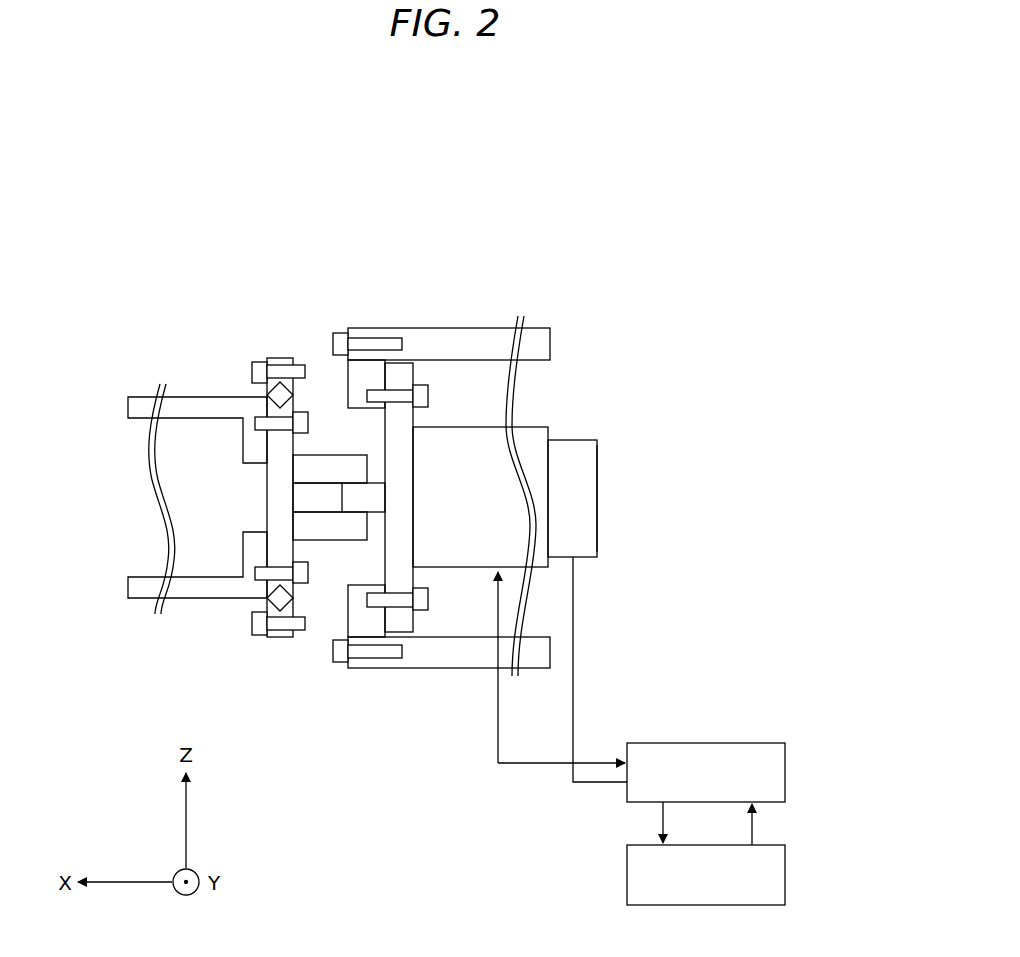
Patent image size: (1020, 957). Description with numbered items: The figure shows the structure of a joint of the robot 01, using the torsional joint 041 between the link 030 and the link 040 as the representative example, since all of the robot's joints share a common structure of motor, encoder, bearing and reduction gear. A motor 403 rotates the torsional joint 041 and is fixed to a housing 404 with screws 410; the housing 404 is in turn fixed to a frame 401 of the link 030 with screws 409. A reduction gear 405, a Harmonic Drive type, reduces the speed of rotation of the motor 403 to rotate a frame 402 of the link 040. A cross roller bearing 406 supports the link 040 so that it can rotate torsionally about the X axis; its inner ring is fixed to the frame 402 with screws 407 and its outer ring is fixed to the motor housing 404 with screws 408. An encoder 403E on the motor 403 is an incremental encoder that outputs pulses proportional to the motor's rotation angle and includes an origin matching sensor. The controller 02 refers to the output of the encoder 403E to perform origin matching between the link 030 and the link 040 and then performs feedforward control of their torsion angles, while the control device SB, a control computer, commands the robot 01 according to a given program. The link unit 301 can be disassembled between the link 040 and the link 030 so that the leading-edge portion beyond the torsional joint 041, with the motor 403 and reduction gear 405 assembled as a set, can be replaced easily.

The robot 01 is at (547, 170).
The link 030 is at (626, 366).
The link 040 is at (133, 479).
The torsional joint 041 is at (267, 491).
The controller 02 is at (787, 768).
The control device SB is at (787, 870).
The link unit 301 is at (132, 272).
The frame 401 is at (540, 331).
The frame 402 is at (140, 400).
The motor 403 is at (545, 466).
The encoder 403E is at (598, 527).
The housing 404 is at (365, 336).
The reduction gear 405 is at (330, 462).
The cross roller bearing 406 is at (282, 365).
The screws 407 is at (253, 578).
The screws 408 is at (278, 632).
The screws 409 is at (366, 670).
The screws 410 is at (420, 608).